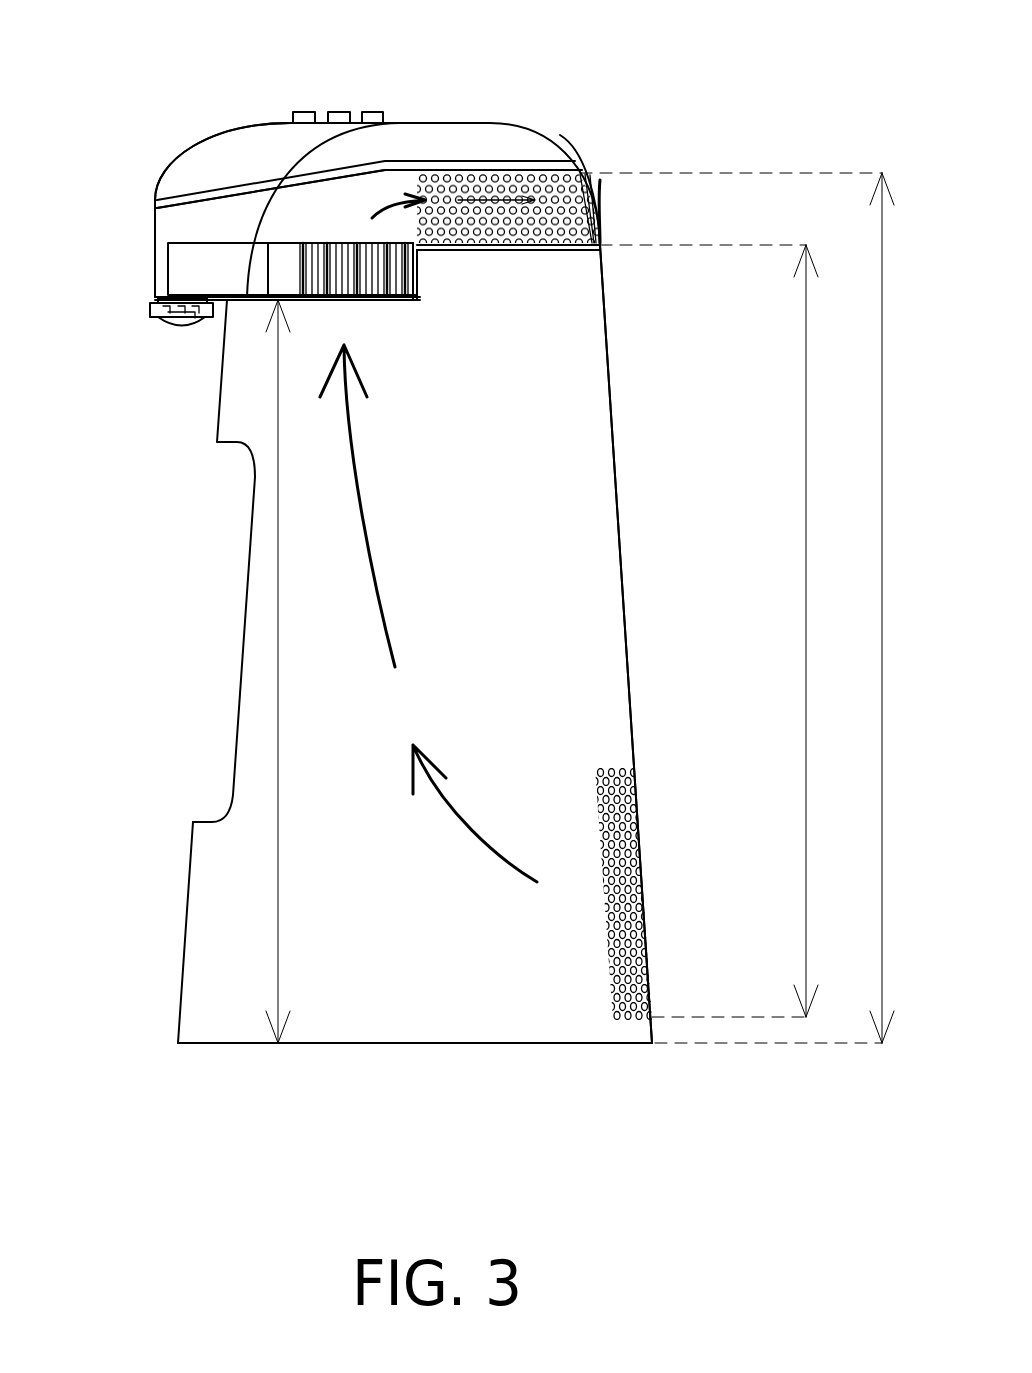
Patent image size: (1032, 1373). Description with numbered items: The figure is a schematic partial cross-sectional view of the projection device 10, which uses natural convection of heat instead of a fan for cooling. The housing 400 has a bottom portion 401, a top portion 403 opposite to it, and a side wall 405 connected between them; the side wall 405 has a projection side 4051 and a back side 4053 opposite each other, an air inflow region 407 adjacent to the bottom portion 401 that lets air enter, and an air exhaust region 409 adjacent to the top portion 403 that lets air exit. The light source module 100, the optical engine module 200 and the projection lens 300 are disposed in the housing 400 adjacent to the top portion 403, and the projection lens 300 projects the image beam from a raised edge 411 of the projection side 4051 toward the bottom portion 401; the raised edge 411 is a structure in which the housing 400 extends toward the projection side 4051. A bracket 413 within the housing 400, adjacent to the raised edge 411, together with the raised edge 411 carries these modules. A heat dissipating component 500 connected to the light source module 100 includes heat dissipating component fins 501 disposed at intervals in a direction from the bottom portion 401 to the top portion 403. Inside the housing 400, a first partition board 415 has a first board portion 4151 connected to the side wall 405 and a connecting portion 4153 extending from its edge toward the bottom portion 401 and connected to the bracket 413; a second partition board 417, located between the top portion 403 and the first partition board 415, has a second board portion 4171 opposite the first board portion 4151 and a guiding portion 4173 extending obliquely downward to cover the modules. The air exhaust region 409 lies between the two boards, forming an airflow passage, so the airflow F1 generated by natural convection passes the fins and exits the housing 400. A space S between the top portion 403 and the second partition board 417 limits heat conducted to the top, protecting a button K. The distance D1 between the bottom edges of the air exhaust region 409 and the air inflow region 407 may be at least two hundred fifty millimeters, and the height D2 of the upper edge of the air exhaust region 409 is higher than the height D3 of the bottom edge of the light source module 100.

The projection device 10 is at (585, 112).
The light source module 100 is at (288, 247).
The optical engine module 200 is at (178, 263).
The projection lens 300 is at (178, 325).
The housing 400 is at (615, 442).
The bottom portion 401 is at (385, 1046).
The top portion 403 is at (390, 122).
The side wall 405 is at (625, 560).
The projection side 4051 is at (187, 885).
The back side 4053 is at (628, 625).
The air inflow region 407 is at (642, 860).
The air exhaust region 409 is at (580, 185).
The raised edge 411 is at (150, 300).
The bracket 413 is at (420, 297).
The first partition board 415 is at (560, 250).
The first board portion 4151 is at (500, 250).
The connecting portion 4153 is at (418, 275).
The second partition board 417 is at (514, 165).
The second board portion 4171 is at (440, 180).
The guiding portion 4173 is at (317, 243).
The heat dissipating component 500 is at (262, 178).
The heat dissipating component fins 501 is at (305, 243).
The button K is at (338, 114).
The space S is at (198, 163).
The airflow F1 is at (362, 534).
The distance D1 is at (721, 631).
The height D2 is at (748, 608).
The height D3 is at (291, 671).